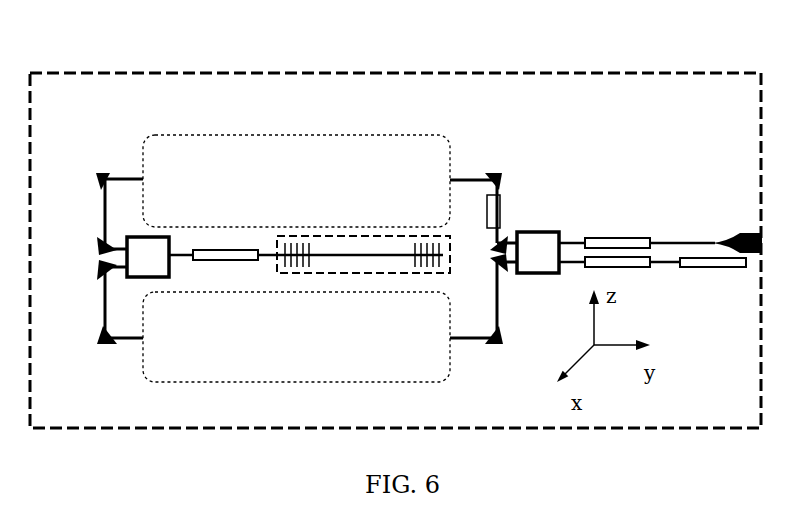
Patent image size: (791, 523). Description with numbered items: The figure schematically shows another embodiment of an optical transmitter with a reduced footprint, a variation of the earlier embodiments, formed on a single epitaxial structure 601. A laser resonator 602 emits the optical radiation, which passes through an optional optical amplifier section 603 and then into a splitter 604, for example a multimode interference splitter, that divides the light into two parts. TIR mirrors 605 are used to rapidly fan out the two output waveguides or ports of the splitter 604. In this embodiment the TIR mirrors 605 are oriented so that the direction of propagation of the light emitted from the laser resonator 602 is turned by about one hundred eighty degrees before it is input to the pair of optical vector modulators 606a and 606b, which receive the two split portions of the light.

The single epitaxial structure 601 is at (71, 73).
The laser resonator 602 is at (362, 236).
The optical amplifier section 603 is at (220, 250).
The splitter 604 is at (127, 237).
The TIR mirrors 605 is at (100, 176).
The optical vector modulator 606a is at (270, 135).
The optical vector modulator 606b is at (257, 382).